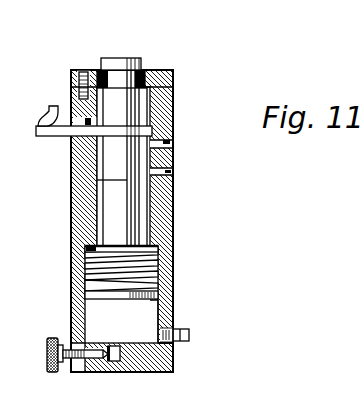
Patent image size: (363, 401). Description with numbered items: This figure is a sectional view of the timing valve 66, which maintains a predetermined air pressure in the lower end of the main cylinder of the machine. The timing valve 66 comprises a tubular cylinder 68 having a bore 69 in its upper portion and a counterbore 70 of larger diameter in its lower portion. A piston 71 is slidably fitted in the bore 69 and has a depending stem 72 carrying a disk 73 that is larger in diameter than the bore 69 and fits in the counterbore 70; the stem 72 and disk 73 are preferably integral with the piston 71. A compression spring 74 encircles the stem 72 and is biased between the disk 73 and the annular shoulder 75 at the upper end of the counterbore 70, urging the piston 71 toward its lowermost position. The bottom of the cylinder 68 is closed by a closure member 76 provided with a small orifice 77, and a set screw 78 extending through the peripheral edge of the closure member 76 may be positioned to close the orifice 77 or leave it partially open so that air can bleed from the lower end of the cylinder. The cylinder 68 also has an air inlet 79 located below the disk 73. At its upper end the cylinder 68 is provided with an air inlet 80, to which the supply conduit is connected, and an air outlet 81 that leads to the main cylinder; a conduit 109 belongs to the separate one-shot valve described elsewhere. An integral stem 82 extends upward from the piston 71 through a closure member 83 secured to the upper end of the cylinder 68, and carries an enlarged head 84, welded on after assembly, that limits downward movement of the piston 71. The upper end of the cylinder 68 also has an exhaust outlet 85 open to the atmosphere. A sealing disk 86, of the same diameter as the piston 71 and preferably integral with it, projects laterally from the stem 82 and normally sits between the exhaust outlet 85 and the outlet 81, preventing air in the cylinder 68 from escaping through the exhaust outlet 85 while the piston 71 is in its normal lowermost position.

The timing valve 66 is at (69, 207).
The tubular cylinder 68 is at (163, 204).
The bore 69 is at (93, 165).
The counterbore 70 is at (166, 303).
The piston 71 is at (106, 220).
The depending stem 72 is at (151, 258).
The disk 73 is at (72, 292).
The compression spring 74 is at (76, 272).
The annular shoulder 75 is at (86, 261).
The closure member 76 is at (145, 368).
The orifice 77 is at (110, 370).
The set screw 78 is at (46, 352).
The air inlet 79 is at (180, 342).
The air inlet 80 is at (166, 172).
The air outlet 81 is at (173, 141).
The stem 82 is at (137, 76).
The closure member 83 is at (174, 73).
The enlarged head 84 is at (121, 58).
The exhaust outlet 85 is at (53, 124).
The sealing disk 86 is at (80, 137).
The conduit 109 is at (189, 331).